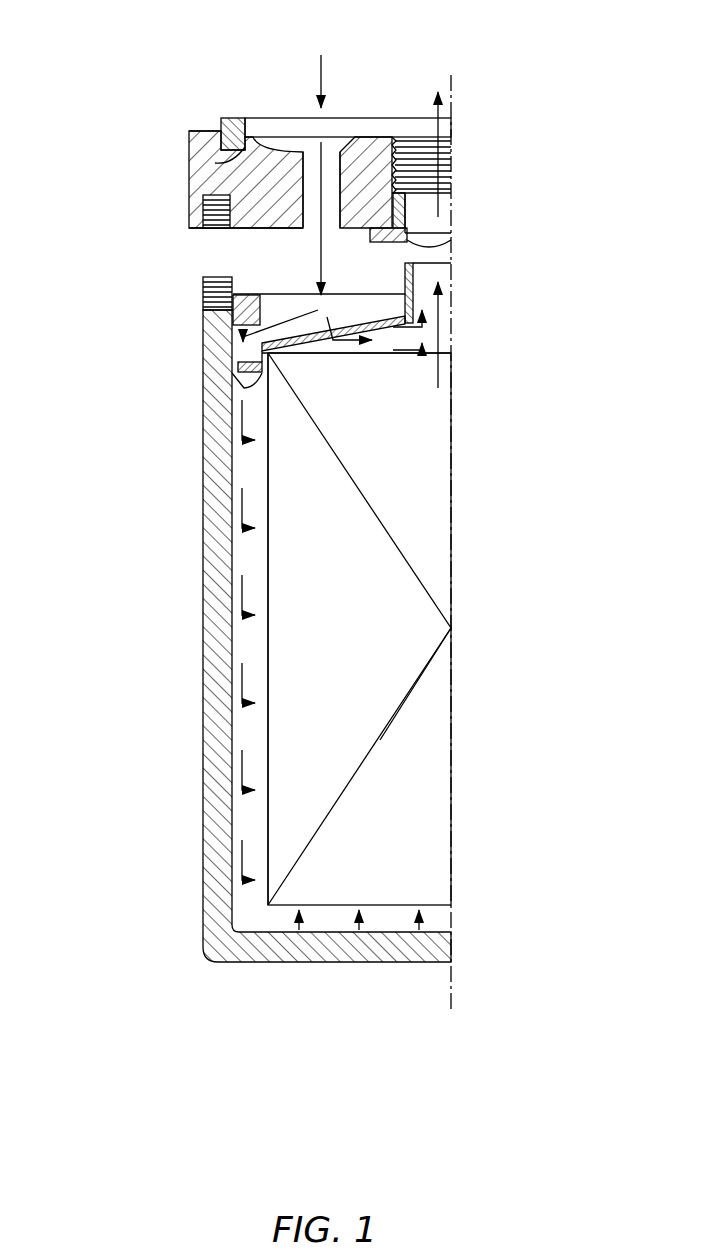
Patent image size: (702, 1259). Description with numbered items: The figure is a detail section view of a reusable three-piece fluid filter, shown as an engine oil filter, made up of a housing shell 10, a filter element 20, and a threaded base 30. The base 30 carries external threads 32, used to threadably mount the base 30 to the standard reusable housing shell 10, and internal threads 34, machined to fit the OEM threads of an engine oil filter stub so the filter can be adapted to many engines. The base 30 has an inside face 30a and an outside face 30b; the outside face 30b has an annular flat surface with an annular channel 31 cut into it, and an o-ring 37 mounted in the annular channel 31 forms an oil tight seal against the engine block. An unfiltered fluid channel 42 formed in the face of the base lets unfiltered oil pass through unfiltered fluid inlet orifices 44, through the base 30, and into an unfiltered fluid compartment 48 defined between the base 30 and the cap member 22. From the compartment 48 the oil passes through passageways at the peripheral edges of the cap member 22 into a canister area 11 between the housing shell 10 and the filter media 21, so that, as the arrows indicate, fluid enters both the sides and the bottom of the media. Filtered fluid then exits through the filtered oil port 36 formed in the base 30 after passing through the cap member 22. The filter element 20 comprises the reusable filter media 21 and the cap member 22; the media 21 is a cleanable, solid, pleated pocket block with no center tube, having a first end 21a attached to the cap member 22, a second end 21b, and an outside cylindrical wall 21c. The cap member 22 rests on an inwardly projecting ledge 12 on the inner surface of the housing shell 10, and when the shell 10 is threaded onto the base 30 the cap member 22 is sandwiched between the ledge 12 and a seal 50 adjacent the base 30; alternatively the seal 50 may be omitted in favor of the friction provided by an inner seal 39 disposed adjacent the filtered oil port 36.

The housing shell 10 is at (207, 795).
The canister area 11 is at (247, 650).
The ledge 12 is at (205, 376).
The filter element 20 is at (470, 513).
The filter media 21 is at (356, 646).
The first end 21a is at (445, 370).
The second end 21b is at (430, 847).
The outside cylindrical wall 21c is at (268, 547).
The cap member 22 is at (413, 288).
The threaded base 30 is at (207, 177).
The inside face 30a is at (240, 230).
The outside face 30b is at (221, 131).
The annular channel 31 is at (218, 163).
The external threads 32 is at (205, 228).
The internal threads 34 is at (447, 148).
The filtered oil port 36 is at (447, 200).
The o-ring 37 is at (235, 118).
The inner seal 39 is at (430, 243).
The unfiltered fluid channel 42 is at (345, 142).
The unfiltered fluid inlet orifices 44 is at (332, 160).
The unfiltered fluid compartment 48 is at (268, 334).
The seal 50 is at (207, 322).